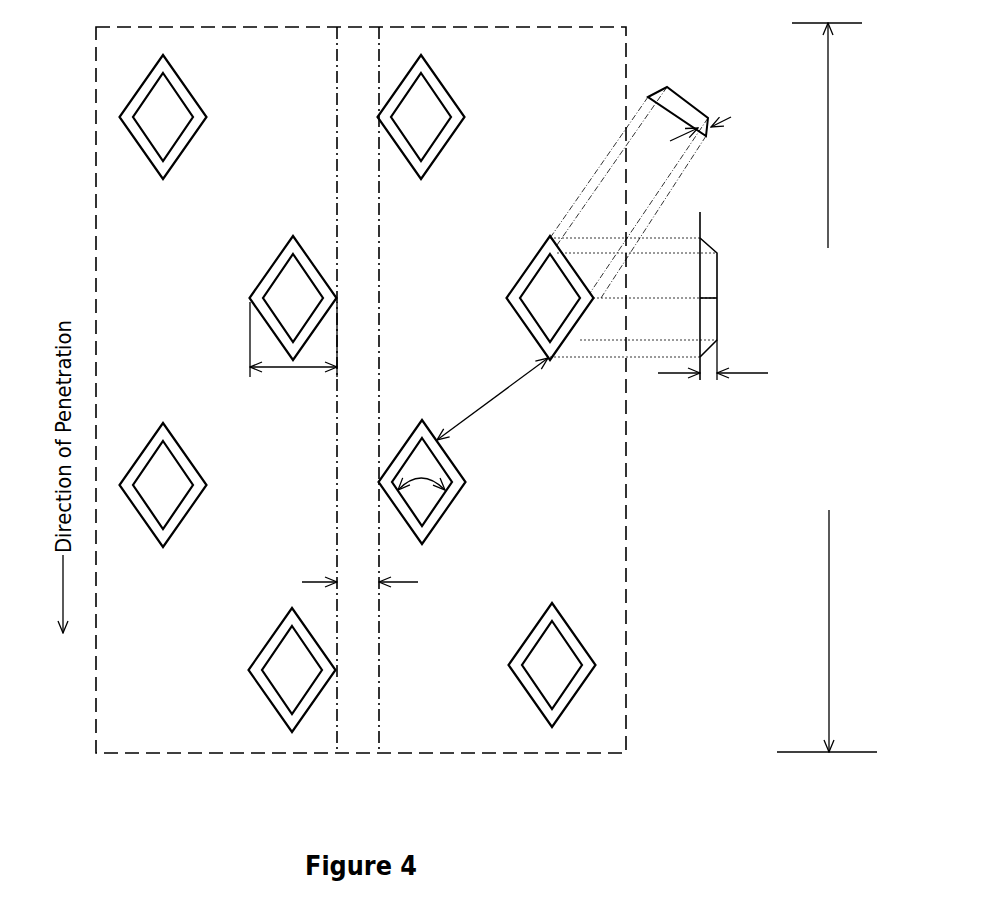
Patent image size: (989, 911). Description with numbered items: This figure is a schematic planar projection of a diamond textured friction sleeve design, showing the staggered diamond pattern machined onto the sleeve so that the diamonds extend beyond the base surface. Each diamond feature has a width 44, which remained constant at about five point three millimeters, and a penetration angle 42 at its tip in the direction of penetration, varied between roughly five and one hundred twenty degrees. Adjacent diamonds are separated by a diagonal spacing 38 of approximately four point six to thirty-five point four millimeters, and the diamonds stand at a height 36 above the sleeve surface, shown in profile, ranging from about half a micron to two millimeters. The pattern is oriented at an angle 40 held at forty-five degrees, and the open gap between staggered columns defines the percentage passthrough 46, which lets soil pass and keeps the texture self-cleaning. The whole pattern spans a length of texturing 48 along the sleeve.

The height (H) 36 is at (710, 422).
The diagonal spacing (S) 38 is at (463, 360).
The angle (α) 40 is at (727, 168).
The penetration angle (β) 42 is at (425, 507).
The width (W) 44 is at (287, 398).
The percentage passthrough 46 is at (458, 588).
The length of texturing (L) 48 is at (817, 485).